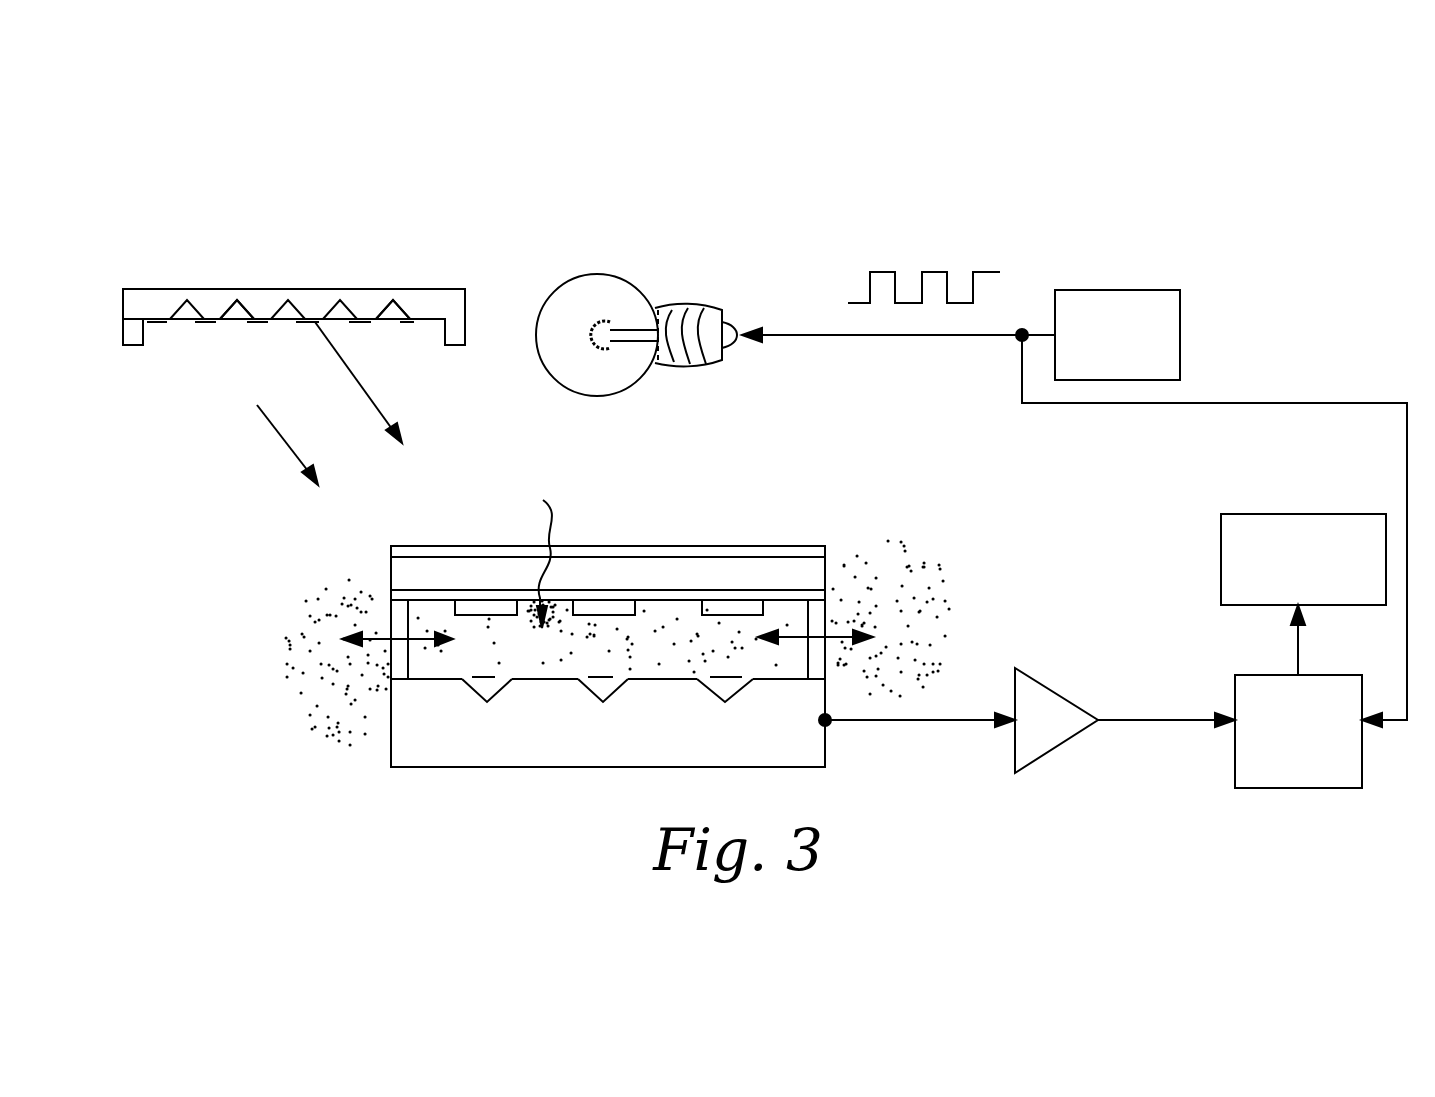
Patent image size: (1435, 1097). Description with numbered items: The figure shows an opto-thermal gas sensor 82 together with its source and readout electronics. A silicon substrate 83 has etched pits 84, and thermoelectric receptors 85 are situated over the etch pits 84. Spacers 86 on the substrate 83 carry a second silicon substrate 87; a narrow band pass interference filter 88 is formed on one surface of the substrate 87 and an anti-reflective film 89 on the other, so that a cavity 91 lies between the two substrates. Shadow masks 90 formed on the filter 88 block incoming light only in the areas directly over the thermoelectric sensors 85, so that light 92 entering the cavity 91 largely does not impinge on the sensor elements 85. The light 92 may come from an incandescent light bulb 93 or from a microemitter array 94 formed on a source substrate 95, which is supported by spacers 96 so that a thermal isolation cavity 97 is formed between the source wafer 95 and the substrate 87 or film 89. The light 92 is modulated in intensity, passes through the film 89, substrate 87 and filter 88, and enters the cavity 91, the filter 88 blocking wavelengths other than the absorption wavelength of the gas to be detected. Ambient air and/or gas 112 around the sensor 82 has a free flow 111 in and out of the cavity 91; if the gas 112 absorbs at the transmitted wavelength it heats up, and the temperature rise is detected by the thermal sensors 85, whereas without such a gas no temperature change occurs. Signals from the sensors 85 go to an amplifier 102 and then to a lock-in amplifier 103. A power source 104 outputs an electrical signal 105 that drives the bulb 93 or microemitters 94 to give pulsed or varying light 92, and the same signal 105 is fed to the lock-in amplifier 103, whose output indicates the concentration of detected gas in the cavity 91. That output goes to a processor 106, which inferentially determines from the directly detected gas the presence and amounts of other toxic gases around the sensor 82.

The opto-thermal gas sensor 82 is at (257, 405).
The silicon substrate 83 is at (825, 767).
The etched pits 84 is at (602, 688).
The thermoelectric receptors 85 is at (719, 680).
The spacers 86 is at (826, 612).
The silicon substrate 87 is at (402, 573).
The narrow band pass interference filter 88 is at (470, 595).
The anti-reflective film 89 is at (820, 545).
The shadow masks 90 is at (628, 616).
The cavity 91 is at (518, 663).
The light 92 is at (550, 514).
The incandescent light bulb 93 is at (610, 276).
The microemitter array 94 is at (393, 320).
The source substrate 95 is at (262, 310).
The spacers 96 is at (143, 332).
The thermal isolation cavity 97 is at (276, 371).
The amplifier 102 is at (1063, 697).
The lock-in amplifier 103 is at (1290, 788).
The power source 104 is at (1122, 290).
The electrical signal 105 is at (987, 270).
The processor 106 is at (1221, 534).
The flow 111 is at (840, 641).
The gas 112 is at (297, 723).